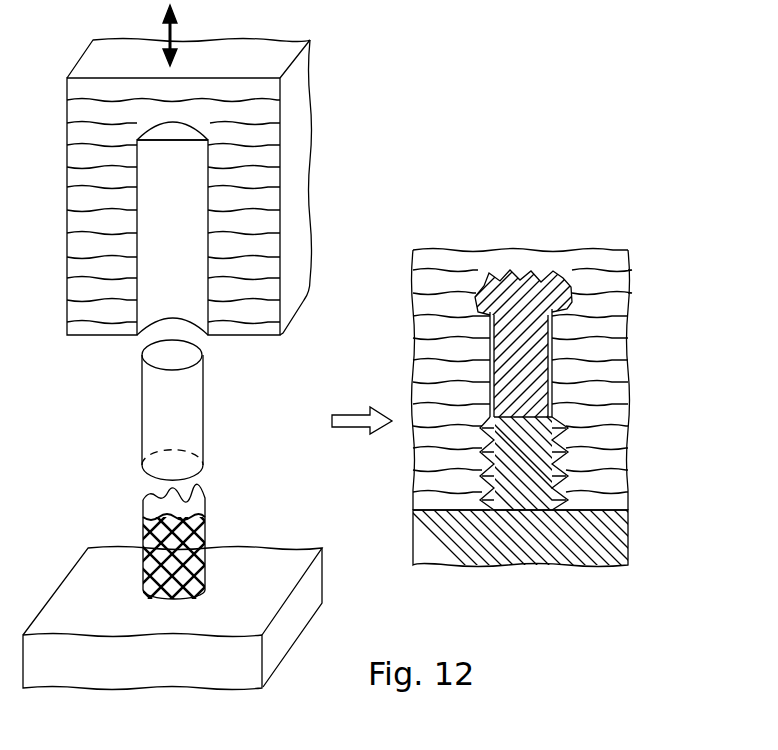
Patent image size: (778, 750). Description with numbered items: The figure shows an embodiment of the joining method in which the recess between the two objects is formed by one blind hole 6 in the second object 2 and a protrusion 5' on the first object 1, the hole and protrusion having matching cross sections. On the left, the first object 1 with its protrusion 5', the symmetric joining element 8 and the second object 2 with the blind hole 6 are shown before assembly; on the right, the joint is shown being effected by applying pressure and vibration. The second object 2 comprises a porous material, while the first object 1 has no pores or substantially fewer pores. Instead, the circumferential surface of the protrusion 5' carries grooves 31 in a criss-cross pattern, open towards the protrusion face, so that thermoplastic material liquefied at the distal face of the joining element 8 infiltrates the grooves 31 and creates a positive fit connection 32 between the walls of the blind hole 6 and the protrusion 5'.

The first object 1 is at (86, 565).
The second object 2 is at (297, 137).
The blind hole 6 is at (181, 221).
The joining element 8 is at (163, 397).
The protrusion 5' is at (143, 539).
The grooves 31 is at (196, 535).
The positive fit connection 32 is at (570, 433).